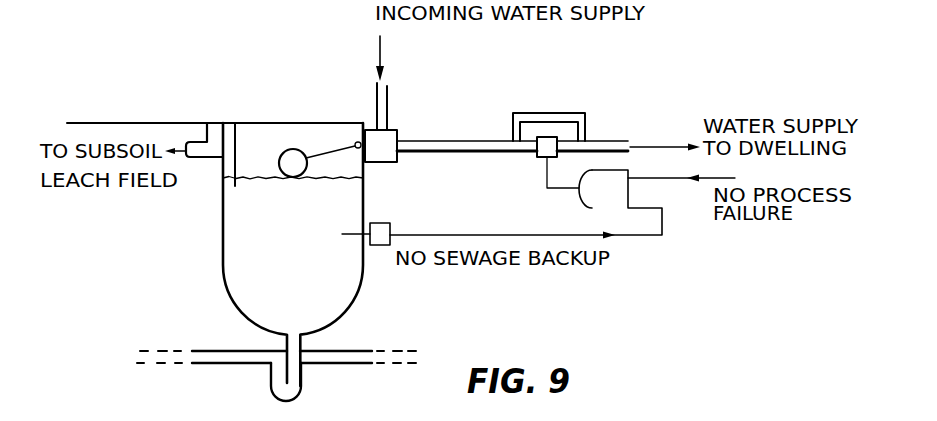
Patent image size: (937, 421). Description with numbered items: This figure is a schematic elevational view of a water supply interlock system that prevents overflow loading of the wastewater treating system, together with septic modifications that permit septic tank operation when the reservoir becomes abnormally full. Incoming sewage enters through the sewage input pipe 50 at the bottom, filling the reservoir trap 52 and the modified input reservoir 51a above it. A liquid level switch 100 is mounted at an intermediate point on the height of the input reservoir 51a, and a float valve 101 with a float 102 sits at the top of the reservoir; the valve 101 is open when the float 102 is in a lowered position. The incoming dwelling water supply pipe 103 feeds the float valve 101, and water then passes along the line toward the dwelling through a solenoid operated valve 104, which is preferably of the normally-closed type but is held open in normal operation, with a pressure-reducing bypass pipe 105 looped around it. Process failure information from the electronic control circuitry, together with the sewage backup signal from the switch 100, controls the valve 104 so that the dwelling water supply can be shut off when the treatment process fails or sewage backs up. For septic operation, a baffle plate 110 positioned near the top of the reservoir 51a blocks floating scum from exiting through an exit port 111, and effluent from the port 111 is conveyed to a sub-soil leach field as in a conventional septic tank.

The sewage input pipe 50 is at (233, 365).
The modified input reservoir 51a is at (360, 299).
The reservoir trap 52 is at (303, 391).
The liquid level switch 100 is at (392, 226).
The float valve 101 is at (383, 155).
The float 102 is at (300, 149).
The incoming dwelling water supply pipe 103 is at (389, 111).
The solenoid operated valve 104 is at (536, 161).
The pressure-reducing bypass pipe 105 is at (547, 113).
The baffle plate 110 is at (235, 150).
The exit port 111 is at (207, 140).